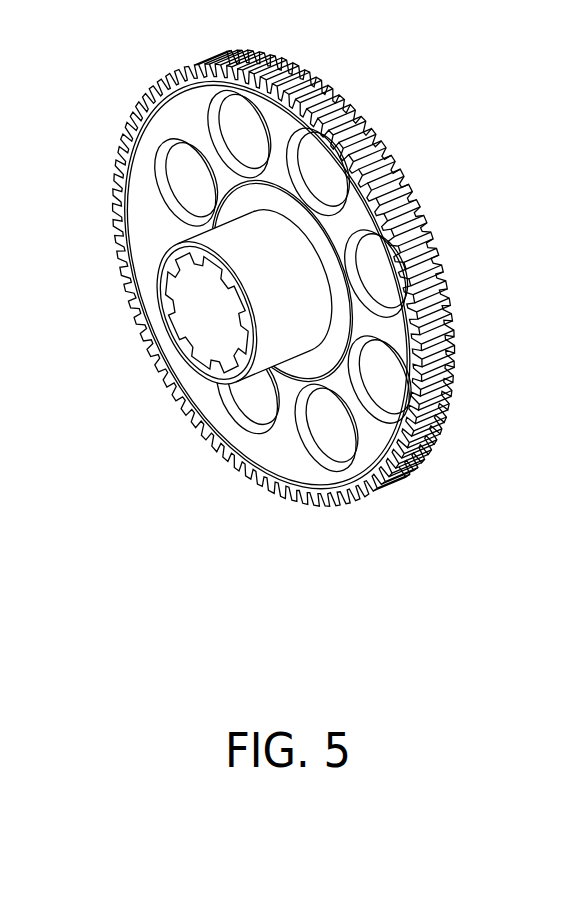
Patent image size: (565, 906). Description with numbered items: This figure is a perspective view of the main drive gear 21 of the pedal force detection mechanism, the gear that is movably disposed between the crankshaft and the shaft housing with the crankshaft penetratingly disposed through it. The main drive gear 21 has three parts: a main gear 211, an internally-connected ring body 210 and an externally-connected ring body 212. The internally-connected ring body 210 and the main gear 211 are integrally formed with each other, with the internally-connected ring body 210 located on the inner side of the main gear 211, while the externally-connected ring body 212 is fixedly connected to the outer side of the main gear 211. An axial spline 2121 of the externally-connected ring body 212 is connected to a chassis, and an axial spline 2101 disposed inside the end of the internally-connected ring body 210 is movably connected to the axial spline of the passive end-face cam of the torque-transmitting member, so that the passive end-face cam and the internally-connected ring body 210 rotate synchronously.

The main drive gear 21 is at (308, 308).
The internally-connected ring body 210 is at (202, 376).
The axial spline 2101 is at (203, 348).
The main gear 211 is at (357, 498).
The externally-connected ring body 212 is at (308, 281).
The axial spline 2121 is at (412, 285).